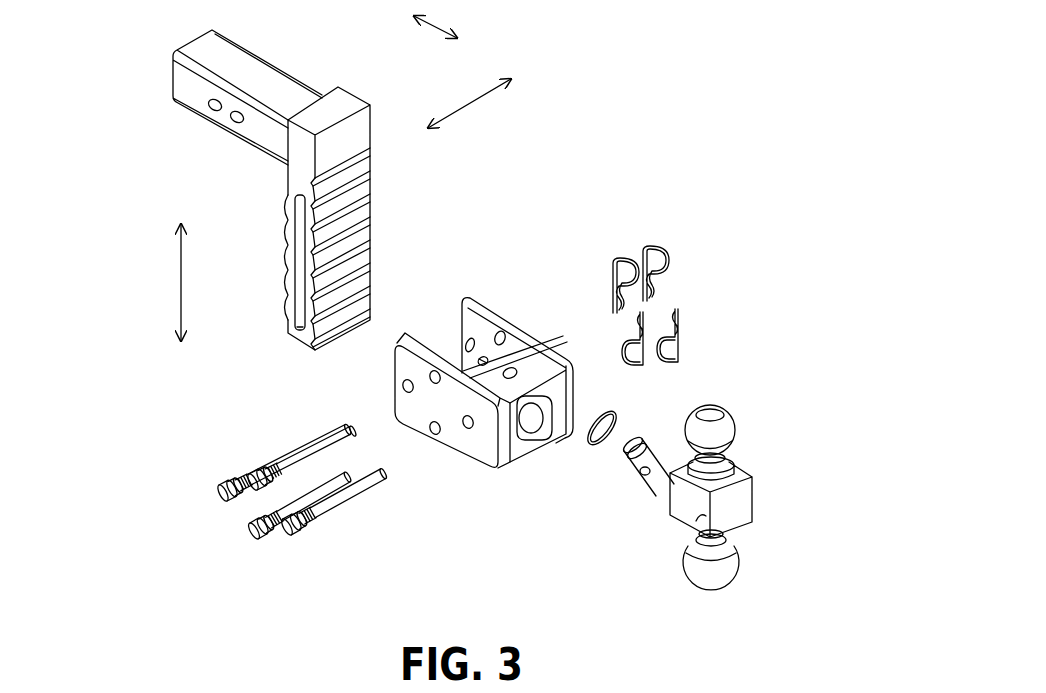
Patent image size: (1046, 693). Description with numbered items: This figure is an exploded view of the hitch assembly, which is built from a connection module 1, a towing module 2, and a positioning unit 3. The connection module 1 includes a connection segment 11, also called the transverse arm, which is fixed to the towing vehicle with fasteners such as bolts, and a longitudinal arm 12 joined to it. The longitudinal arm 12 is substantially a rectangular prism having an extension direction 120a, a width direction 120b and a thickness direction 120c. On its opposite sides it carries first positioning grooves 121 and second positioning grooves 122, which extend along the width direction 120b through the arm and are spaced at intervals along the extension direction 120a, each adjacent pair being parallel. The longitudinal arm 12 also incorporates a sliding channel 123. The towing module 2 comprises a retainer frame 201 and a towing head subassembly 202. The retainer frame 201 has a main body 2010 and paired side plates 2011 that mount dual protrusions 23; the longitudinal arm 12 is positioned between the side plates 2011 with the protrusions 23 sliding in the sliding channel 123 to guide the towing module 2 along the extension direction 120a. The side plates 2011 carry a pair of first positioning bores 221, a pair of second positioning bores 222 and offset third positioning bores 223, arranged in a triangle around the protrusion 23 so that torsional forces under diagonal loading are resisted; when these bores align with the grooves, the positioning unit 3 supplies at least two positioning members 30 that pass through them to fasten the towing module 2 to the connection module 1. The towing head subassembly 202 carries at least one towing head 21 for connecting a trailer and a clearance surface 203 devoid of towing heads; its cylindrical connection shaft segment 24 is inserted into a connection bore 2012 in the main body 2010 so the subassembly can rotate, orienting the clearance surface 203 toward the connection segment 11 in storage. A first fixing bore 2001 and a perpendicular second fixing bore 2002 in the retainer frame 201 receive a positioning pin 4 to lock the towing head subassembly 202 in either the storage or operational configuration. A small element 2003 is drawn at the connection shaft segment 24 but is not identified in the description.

The connection module 1 is at (221, 148).
The connection segment 11 is at (236, 66).
The longitudinal arm 12 is at (357, 221).
The first positioning grooves 121 is at (287, 194).
The second positioning grooves 122 is at (372, 157).
The sliding channel 123 is at (292, 322).
The extension direction 120a is at (155, 282).
The width direction 120b is at (469, 102).
The thickness direction 120c is at (448, 19).
The towing module 2 is at (752, 409).
The towing head 21 is at (722, 437).
The towing head subassembly 202 is at (738, 505).
The clearance surface 203 is at (700, 518).
The connection shaft segment 24 is at (657, 490).
The shank pin hole 2003 is at (633, 478).
The retainer frame 201 is at (447, 443).
The first fixing bore 2001 is at (575, 392).
The second fixing bore 2002 is at (460, 442).
The main body 2010 is at (517, 376).
The side plates 2011 is at (525, 367).
The connection bore 2012 is at (533, 445).
The first positioning bores 221 is at (430, 376).
The second positioning bores 222 is at (403, 387).
The third positioning bores 223 is at (434, 434).
The protrusion 23 is at (483, 357).
The positioning unit 3 is at (252, 538).
The positioning members 30 is at (319, 443).
The positioning pin 4 is at (300, 537).